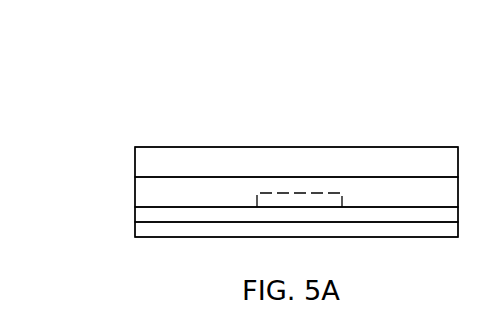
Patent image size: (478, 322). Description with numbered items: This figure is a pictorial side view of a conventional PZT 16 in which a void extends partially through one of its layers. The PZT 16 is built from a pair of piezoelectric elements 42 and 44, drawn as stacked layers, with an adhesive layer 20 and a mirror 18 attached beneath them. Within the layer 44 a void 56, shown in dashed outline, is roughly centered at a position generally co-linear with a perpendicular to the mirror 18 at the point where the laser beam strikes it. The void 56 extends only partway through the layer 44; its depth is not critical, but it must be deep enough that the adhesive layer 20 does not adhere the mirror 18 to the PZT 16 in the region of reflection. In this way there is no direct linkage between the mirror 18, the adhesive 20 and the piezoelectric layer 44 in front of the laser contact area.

The PZT 16 is at (118, 100).
The piezoelectric element 42 is at (134, 163).
The piezoelectric element 44 is at (134, 192).
The void 56 is at (297, 193).
The adhesive layer 20 is at (134, 213).
The mirror 18 is at (134, 232).